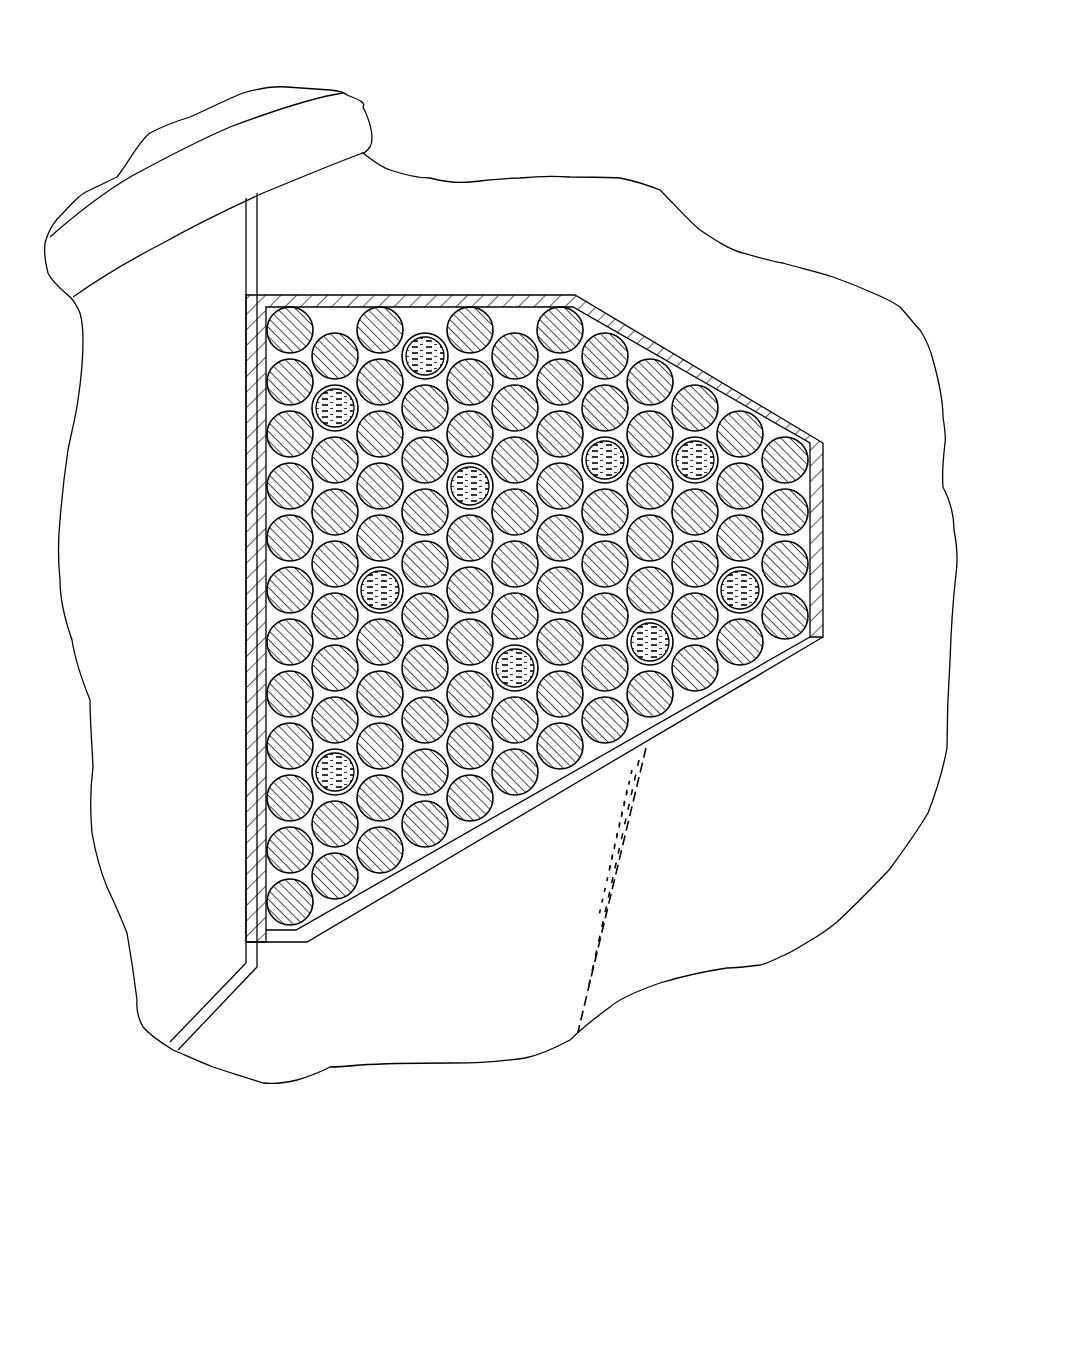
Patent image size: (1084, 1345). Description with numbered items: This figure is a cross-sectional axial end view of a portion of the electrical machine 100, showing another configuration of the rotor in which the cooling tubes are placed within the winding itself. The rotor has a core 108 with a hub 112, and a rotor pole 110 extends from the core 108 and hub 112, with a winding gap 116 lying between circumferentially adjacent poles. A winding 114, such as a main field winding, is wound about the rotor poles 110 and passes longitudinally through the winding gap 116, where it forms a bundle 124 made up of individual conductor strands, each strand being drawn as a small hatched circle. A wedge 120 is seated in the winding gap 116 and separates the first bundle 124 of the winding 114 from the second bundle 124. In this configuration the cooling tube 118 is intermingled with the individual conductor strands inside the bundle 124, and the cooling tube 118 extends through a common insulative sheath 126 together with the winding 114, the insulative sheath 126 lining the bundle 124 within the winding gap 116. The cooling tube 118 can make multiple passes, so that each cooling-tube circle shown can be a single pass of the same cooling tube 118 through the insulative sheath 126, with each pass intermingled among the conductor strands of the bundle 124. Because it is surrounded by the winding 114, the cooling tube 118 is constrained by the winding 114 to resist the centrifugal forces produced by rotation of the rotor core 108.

The electrical machine 100 is at (777, 140).
The rotor pole 110 is at (852, 352).
The wedge 120 is at (160, 612).
The winding gap 116 is at (267, 990).
The insulative sheath 126 is at (520, 294).
The winding 114 is at (537, 567).
The bundle 124 is at (332, 325).
The cooling tube 118 is at (695, 452).
The core 108 is at (660, 890).
The hub 112 is at (762, 900).